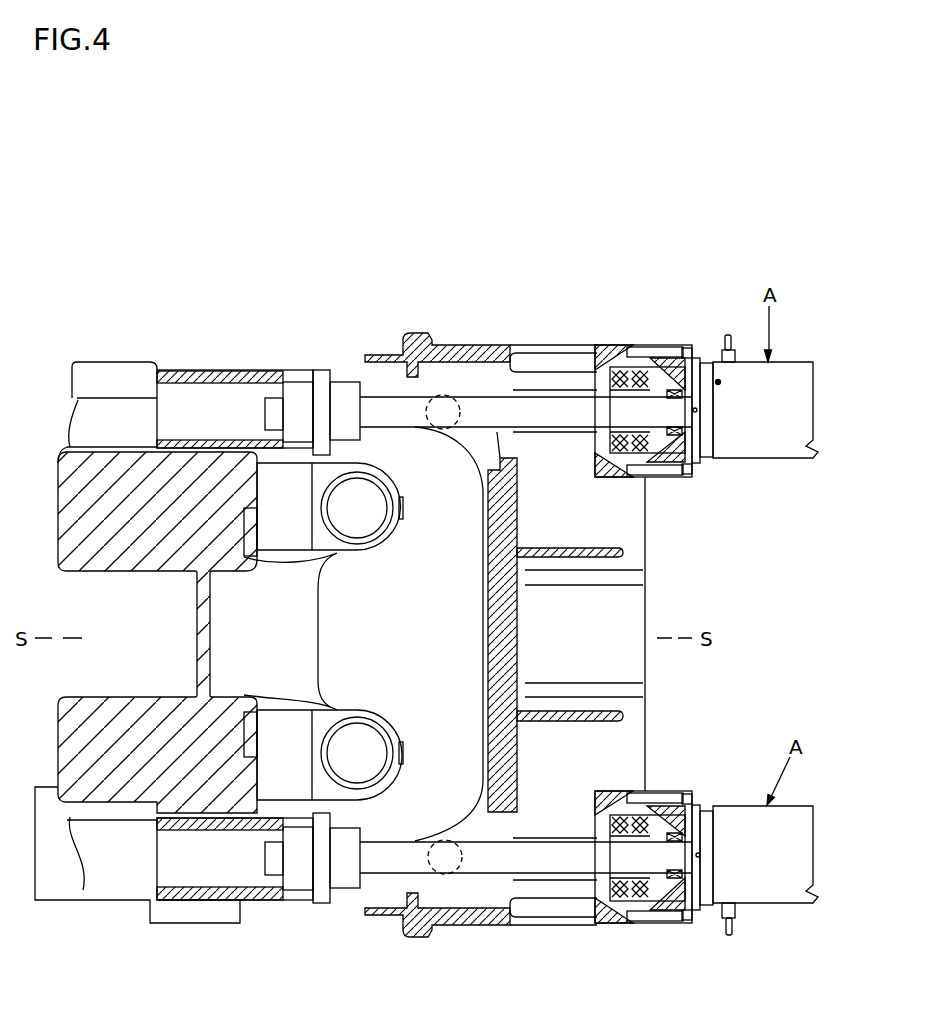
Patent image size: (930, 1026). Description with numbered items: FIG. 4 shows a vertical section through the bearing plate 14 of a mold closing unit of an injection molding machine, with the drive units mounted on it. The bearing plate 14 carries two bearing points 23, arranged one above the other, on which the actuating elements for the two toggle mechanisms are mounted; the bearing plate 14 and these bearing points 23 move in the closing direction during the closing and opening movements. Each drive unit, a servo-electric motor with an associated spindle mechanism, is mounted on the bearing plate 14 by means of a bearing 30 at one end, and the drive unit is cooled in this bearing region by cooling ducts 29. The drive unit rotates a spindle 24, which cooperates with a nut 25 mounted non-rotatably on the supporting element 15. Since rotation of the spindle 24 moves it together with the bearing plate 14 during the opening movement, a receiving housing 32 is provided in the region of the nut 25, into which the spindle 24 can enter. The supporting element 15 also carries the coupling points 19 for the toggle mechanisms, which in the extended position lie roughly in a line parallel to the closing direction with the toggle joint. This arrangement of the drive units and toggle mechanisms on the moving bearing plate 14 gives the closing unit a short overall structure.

The bearing plate 14 is at (592, 650).
The supporting element 15 is at (145, 360).
The coupling point 19 is at (358, 750).
The bearing point 23 is at (457, 405).
The spindle 24 is at (540, 407).
The nut 25 is at (318, 372).
The cooling ducts 29 is at (652, 463).
The bearing 30 is at (637, 337).
The receiving housing 32 is at (247, 382).